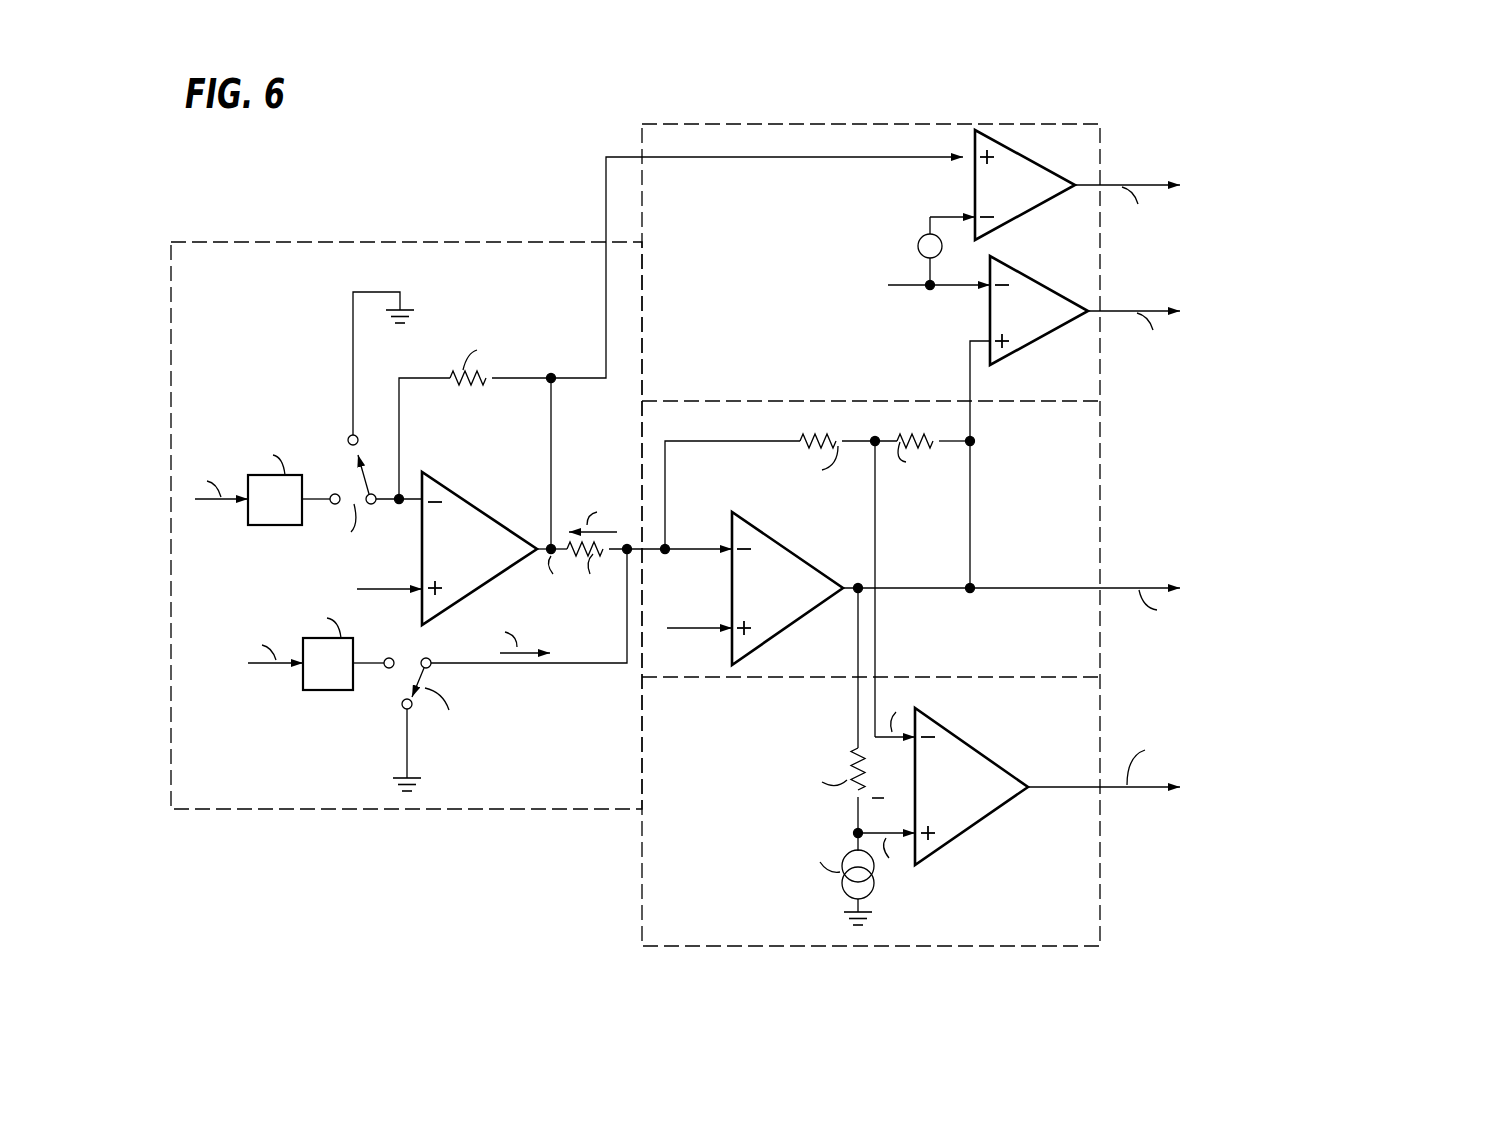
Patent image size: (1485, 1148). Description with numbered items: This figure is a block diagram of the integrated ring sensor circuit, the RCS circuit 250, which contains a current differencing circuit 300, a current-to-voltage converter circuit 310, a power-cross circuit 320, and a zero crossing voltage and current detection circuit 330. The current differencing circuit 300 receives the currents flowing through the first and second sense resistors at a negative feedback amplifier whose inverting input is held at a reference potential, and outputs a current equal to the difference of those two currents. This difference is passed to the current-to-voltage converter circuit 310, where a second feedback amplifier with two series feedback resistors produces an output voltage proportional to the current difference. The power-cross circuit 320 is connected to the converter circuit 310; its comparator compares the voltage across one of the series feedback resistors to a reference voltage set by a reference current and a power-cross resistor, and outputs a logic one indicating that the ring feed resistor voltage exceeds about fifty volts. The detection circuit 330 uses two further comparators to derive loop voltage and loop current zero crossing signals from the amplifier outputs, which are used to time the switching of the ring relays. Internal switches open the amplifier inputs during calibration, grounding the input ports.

The RCS circuit 250 is at (938, 92).
The current differencing circuit 300 is at (468, 242).
The current-to-voltage converter circuit 310 is at (1100, 445).
The power-cross circuit 320 is at (1100, 890).
The zero crossing voltage and current detection circuit 330 is at (1100, 160).